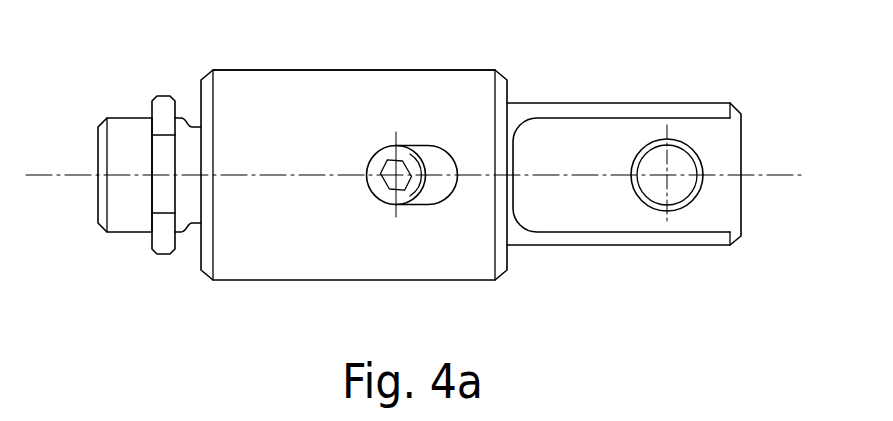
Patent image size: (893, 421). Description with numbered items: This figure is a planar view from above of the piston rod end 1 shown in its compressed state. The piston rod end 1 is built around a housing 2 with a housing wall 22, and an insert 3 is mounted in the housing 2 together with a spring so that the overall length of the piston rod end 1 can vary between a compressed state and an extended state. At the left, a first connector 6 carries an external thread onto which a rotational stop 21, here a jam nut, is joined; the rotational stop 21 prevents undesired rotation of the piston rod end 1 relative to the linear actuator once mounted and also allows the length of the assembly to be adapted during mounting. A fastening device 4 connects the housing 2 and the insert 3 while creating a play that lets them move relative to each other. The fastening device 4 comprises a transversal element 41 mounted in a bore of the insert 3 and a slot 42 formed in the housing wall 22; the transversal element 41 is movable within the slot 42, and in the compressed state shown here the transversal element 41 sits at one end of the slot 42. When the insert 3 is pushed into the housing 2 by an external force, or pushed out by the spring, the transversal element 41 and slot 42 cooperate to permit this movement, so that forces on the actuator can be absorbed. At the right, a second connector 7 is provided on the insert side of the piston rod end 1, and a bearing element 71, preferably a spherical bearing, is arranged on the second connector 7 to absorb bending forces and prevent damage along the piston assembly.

The piston rod end 1 is at (525, 74).
The housing 2 is at (251, 250).
The housing wall 22 is at (258, 100).
The rotational stop 21 is at (164, 243).
The first connector 6 is at (122, 197).
The fastening device 4 is at (391, 144).
The transversal element 41 is at (388, 196).
The slot 42 is at (437, 157).
The insert 3 is at (558, 236).
The second connector 7 is at (710, 142).
The bearing element 71 is at (672, 141).